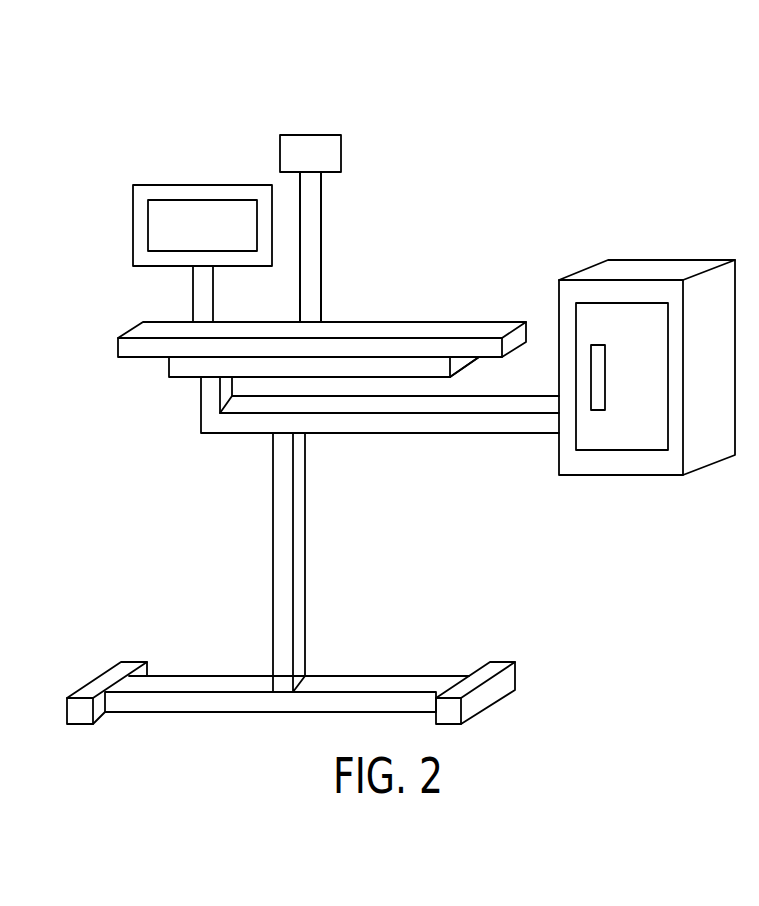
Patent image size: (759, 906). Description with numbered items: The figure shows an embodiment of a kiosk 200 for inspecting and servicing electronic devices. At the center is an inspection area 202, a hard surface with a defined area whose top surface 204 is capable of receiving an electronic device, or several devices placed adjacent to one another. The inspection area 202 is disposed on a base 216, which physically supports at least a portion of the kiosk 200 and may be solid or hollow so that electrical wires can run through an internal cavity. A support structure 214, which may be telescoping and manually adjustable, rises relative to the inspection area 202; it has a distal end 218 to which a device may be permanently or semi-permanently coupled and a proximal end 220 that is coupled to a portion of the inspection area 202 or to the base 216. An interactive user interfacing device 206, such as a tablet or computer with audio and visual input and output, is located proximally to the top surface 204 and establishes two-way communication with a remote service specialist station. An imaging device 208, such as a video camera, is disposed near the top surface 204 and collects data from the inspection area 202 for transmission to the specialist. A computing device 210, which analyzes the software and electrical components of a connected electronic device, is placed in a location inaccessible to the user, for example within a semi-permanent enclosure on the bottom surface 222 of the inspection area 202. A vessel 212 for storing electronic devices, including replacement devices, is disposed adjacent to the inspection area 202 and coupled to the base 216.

The kiosk 200 is at (538, 110).
The inspection area 202 is at (130, 332).
The top surface 204 is at (468, 336).
The interactive user interfacing device 206 is at (157, 183).
The imaging device 208 is at (313, 133).
The computing device 210 is at (183, 380).
The vessel 212 is at (657, 258).
The support structure 214 is at (192, 296).
The base 216 is at (367, 434).
The distal end 218 is at (325, 187).
The proximal end 220 is at (322, 320).
The bottom surface 222 is at (482, 362).